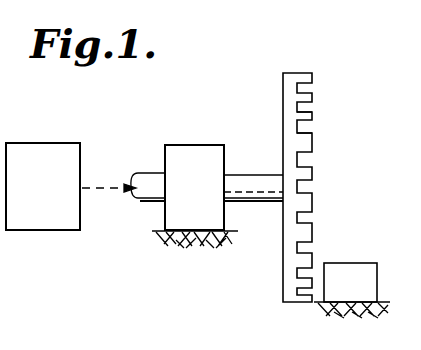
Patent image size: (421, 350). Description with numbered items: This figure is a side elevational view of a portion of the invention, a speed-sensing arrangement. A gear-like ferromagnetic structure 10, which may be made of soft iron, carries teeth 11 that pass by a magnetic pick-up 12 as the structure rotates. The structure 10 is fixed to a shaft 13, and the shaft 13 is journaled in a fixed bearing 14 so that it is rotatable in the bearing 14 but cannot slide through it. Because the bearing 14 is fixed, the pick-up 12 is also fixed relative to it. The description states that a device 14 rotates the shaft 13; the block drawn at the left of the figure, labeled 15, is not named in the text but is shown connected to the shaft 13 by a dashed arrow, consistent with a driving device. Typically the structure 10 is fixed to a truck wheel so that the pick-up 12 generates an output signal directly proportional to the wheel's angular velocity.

The gear-like ferromagnetic structure 10 is at (290, 73).
The teeth 11 is at (312, 118).
The magnetic pick-up 12 is at (333, 263).
The shaft 13 is at (235, 182).
The fixed bearing 14 is at (193, 146).
The control unit 15 is at (43, 143).